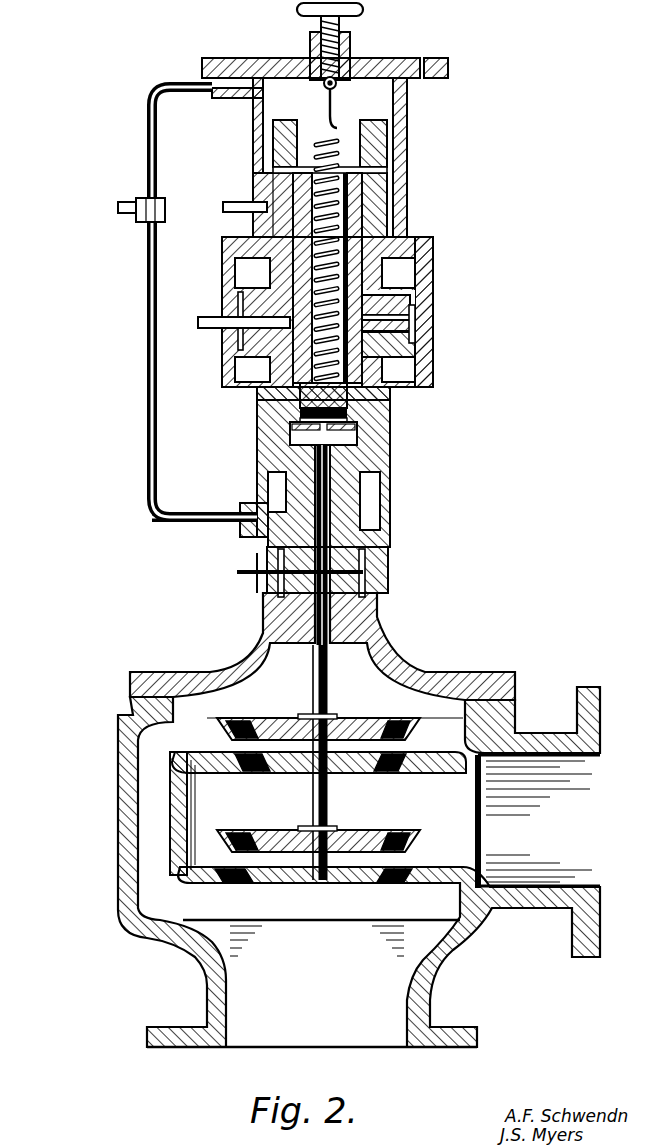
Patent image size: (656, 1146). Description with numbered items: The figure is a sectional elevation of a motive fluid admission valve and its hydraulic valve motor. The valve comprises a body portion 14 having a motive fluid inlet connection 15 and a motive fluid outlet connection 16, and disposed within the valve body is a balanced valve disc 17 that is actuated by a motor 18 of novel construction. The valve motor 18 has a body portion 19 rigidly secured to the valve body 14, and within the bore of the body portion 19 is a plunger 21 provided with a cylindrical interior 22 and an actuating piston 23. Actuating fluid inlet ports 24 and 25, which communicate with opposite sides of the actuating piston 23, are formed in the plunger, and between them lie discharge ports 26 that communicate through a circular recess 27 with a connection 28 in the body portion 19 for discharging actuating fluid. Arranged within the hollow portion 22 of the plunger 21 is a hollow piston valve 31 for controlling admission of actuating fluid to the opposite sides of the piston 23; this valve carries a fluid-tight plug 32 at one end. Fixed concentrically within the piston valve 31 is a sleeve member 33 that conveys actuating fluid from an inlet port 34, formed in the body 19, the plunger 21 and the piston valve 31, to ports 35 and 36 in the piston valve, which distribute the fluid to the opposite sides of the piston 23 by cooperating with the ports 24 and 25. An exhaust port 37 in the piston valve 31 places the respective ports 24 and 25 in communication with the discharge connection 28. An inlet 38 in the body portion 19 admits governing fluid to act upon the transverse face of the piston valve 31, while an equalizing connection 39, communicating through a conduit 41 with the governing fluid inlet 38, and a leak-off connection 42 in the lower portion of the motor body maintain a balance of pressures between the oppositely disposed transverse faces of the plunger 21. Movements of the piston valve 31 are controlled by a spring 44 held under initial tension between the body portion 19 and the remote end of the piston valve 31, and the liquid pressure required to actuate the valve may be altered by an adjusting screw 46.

The body portion 14 is at (120, 822).
The motive fluid inlet connection 15 is at (600, 806).
The motive fluid outlet connection 16 is at (255, 1030).
The balanced valve disc 17 is at (357, 740).
The motor 18 is at (208, 253).
The body portion 19 is at (430, 388).
The plunger 21 is at (350, 498).
The cylindrical interior 22 is at (350, 438).
The actuating piston 23 is at (418, 283).
The actuating fluid inlet port 24 is at (400, 316).
The actuating fluid inlet port 25 is at (420, 337).
The discharge ports 26 is at (420, 332).
The circular recess 27 is at (413, 307).
The connection 28 is at (200, 322).
The hollow piston valve 31 is at (353, 250).
The fluid-tight plug 32 is at (290, 433).
The sleeve member 33 is at (360, 187).
The inlet port 34 is at (225, 207).
The port 35 is at (362, 290).
The port 36 is at (393, 400).
The exhaust port 37 is at (385, 368).
The inlet 38 is at (211, 78).
The equalizing connection 39 is at (228, 512).
The conduit 41 is at (146, 402).
The leak-off connection 42 is at (237, 572).
The spring 44 is at (338, 106).
The adjusting screw 46 is at (363, 10).